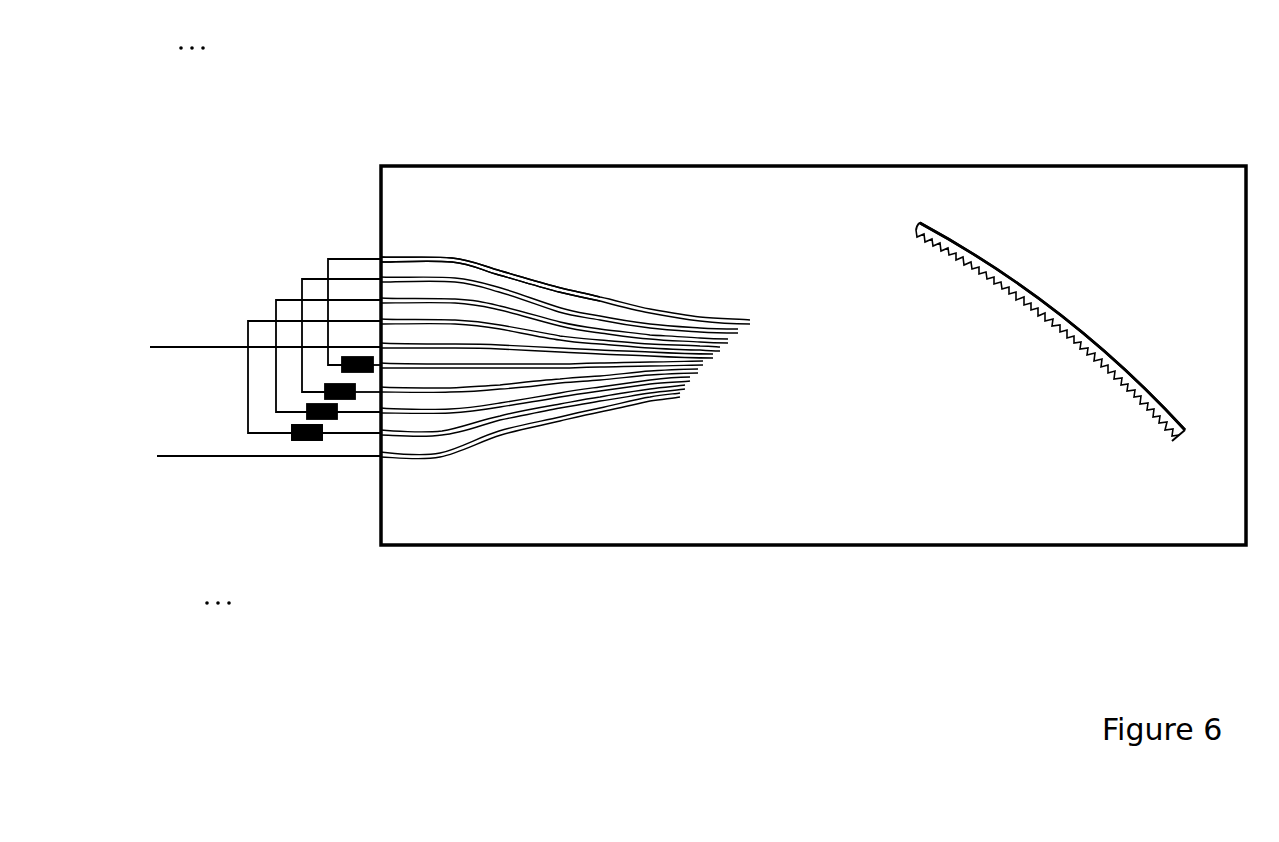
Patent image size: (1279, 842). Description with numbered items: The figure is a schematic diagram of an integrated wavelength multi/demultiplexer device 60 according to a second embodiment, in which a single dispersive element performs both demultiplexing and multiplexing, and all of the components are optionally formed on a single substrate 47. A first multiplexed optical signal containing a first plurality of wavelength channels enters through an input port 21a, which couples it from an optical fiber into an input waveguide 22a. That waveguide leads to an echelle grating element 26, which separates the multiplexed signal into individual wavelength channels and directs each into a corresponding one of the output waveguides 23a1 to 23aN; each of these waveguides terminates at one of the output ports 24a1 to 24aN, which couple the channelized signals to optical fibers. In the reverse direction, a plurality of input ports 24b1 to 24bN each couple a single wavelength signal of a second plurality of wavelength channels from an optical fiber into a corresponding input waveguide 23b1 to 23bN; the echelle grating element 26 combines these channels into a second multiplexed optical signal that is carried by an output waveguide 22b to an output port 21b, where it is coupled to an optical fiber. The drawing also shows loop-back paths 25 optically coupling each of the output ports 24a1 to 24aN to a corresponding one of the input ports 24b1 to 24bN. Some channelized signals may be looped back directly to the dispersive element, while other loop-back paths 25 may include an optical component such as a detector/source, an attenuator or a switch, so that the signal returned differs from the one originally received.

The integrated multi/demultiplexer device 60 is at (837, 87).
The substrate 47 is at (920, 193).
The echelle grating element 26 is at (1077, 310).
The input waveguide 22a is at (589, 408).
The output waveguide 22b is at (650, 312).
The first output waveguide 23a1 is at (514, 334).
The Nth output waveguide 23aN is at (494, 268).
The first input waveguide 23b1 is at (462, 443).
The Nth input waveguide 23bN is at (462, 367).
The first output port 24a1 is at (381, 340).
The Nth output port 24aN is at (381, 338).
The first input port 24b1 is at (381, 430).
The Nth input port 24bN is at (381, 368).
The input port 21a is at (382, 457).
The output port 21b is at (381, 343).
The loop-back paths 25 is at (302, 442).